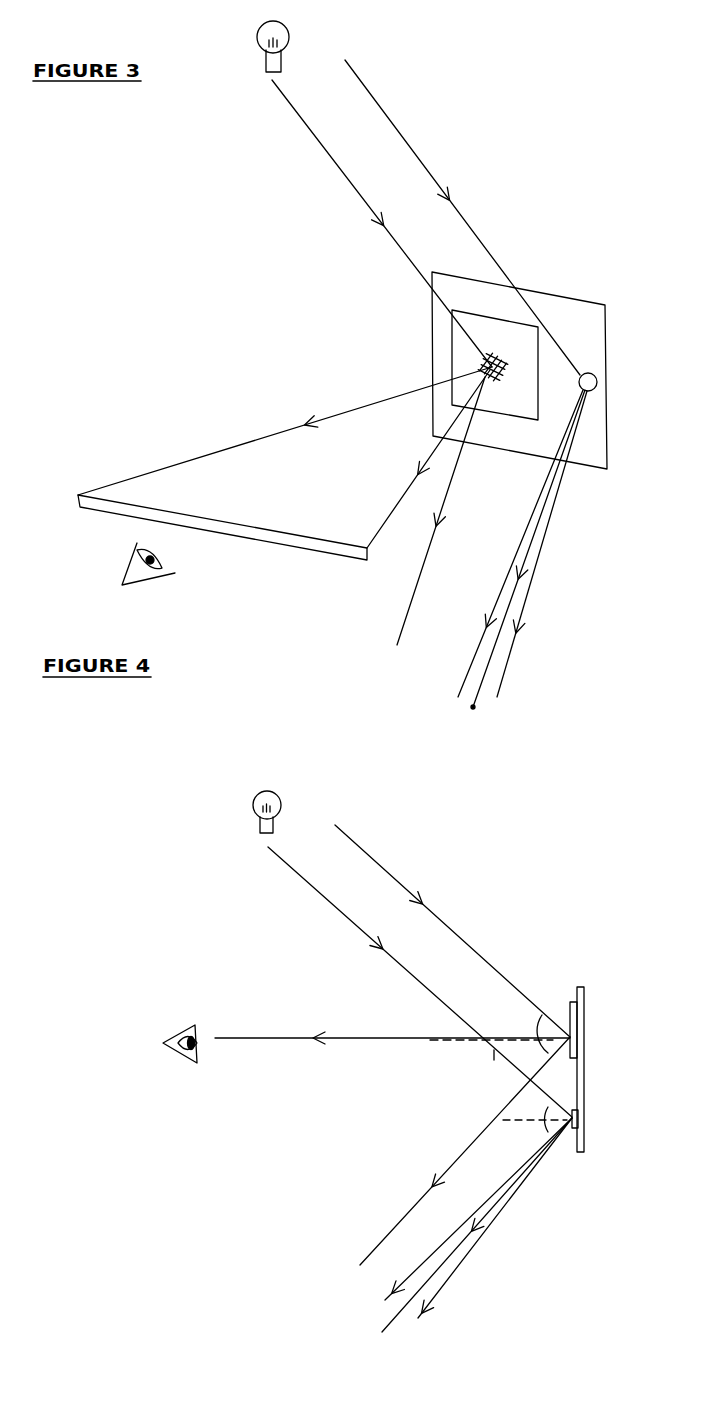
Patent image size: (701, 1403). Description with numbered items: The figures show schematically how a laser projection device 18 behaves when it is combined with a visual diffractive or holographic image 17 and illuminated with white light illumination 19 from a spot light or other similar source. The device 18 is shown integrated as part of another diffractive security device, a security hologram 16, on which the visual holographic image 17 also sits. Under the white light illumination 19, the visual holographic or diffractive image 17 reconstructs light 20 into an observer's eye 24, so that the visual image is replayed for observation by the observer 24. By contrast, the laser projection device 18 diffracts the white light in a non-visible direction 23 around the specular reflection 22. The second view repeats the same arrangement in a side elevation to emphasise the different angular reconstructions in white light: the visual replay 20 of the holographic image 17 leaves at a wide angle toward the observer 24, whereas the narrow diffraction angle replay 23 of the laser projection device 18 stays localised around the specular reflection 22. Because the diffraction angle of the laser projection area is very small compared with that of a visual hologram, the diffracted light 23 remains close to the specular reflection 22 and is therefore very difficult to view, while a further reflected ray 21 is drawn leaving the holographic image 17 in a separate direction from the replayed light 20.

In FIG. 3, the security hologram 16 is at (534, 370).
In FIG. 4, the security hologram 16 is at (598, 1059).
In FIG. 3, the visual diffractive or holographic image 17 is at (527, 322).
In FIG. 4, the visual diffractive or holographic image 17 is at (574, 1030).
In FIG. 3, the device 18 is at (598, 382).
In FIG. 4, the device 18 is at (555, 1091).
In FIG. 3, the white light illumination 19 is at (456, 207).
In FIG. 4, the white light illumination 19 is at (445, 918).
In FIG. 3, the reconstructed light 20 is at (285, 471).
In FIG. 4, the reconstructed light 20 is at (392, 1049).
In FIG. 3, the specularly reflected light from region 17 21 is at (428, 521).
In FIG. 4, the specularly reflected light from region 17 21 is at (447, 1159).
In FIG. 3, the specular reflection 22 is at (519, 563).
In FIG. 4, the specular reflection 22 is at (463, 1238).
In FIG. 3, the non-visible diffraction direction 23 is at (508, 553).
In FIG. 4, the non-visible diffraction direction 23 is at (462, 1234).
In FIG. 3, the observer's eye 24 is at (148, 574).
In FIG. 4, the observer's eye 24 is at (178, 1057).